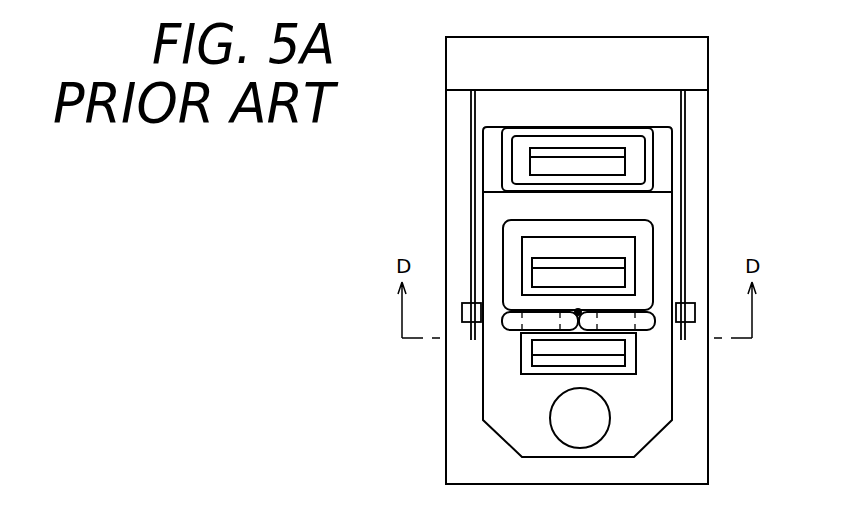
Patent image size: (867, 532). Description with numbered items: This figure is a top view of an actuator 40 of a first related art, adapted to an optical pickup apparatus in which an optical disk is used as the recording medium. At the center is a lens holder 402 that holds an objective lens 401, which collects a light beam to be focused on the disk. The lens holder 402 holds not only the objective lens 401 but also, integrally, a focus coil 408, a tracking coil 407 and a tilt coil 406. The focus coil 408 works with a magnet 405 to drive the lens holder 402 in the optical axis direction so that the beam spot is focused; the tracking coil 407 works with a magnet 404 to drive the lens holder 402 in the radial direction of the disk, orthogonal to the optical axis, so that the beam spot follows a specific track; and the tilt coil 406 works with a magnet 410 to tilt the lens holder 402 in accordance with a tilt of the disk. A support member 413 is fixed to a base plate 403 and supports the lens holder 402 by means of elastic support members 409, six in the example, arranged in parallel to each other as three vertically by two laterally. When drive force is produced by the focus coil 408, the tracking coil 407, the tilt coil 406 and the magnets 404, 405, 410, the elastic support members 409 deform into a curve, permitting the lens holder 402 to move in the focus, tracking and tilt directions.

The actuator 40 is at (683, 24).
The objective lens 401 is at (557, 420).
The lens holder 402 is at (647, 435).
The base plate 403 is at (702, 467).
The magnet 404 is at (595, 350).
The magnet 405 is at (567, 280).
The tilt coil 406 is at (597, 132).
The tracking coil 407 is at (515, 326).
The focus coil 408 is at (607, 226).
The elastic support members 409 is at (471, 117).
The magnet 410 is at (553, 160).
The support member 413 is at (698, 57).